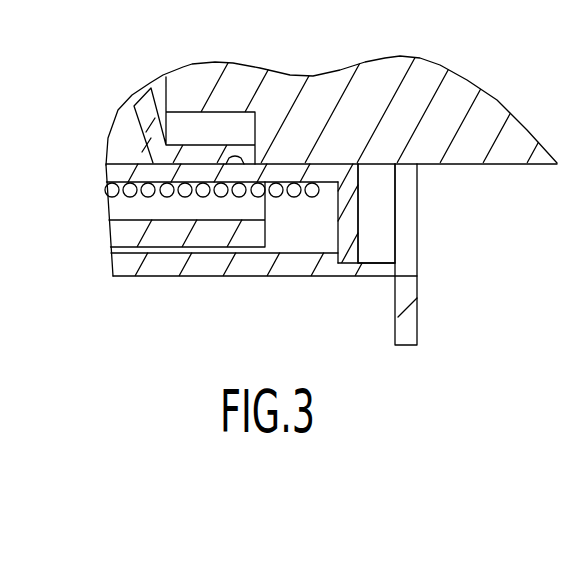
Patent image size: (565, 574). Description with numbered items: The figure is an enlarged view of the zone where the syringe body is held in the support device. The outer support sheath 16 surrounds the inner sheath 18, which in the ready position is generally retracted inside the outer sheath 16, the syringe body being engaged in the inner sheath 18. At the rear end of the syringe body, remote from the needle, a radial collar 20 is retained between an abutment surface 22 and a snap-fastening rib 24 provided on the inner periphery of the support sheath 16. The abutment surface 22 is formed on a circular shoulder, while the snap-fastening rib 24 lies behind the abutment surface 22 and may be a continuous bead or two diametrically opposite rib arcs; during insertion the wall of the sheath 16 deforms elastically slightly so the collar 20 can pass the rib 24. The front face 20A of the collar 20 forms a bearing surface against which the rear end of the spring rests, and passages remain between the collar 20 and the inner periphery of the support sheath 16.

The outer support sheath 16 is at (162, 265).
The inner sheath 18 is at (122, 233).
The radial collar 20 is at (352, 205).
The front face of the collar 20A is at (332, 225).
The abutment surface 22 is at (368, 258).
The snap-fastening rib 24 is at (372, 250).